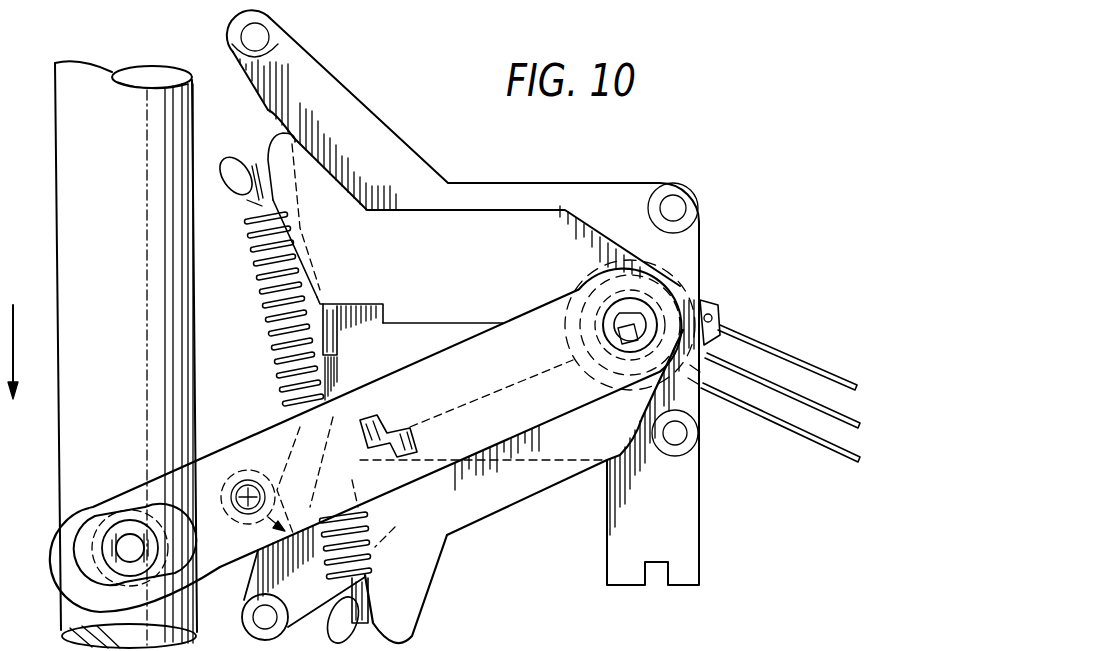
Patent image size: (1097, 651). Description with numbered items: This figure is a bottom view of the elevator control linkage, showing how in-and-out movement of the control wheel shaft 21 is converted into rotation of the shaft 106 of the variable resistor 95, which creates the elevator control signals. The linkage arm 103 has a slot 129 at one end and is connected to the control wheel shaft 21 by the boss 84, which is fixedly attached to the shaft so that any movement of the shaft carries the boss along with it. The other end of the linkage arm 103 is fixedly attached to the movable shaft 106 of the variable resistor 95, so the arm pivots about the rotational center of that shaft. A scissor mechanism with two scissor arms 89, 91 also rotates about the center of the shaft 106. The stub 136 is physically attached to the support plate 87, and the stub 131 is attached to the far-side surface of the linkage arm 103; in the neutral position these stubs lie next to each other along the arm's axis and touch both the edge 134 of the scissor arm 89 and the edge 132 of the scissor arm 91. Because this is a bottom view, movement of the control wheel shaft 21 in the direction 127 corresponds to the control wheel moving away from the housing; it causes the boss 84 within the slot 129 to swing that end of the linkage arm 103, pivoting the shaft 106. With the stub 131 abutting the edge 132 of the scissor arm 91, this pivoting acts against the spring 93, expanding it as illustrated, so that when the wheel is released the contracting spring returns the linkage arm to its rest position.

The direction 127 is at (15, 350).
The control wheel shaft 21 is at (183, 390).
The support plate 87 is at (542, 182).
The scissor arm 89 is at (277, 148).
The spring 93 is at (277, 327).
The edge 134 is at (357, 303).
The stub 136 is at (409, 322).
The edge 132 is at (350, 380).
The linkage arm 103 is at (231, 446).
The stub 131 is at (388, 432).
The slot 129 is at (82, 535).
The boss 84 is at (113, 527).
The shaft 106 is at (637, 313).
The variable resistor 95 is at (704, 300).
The scissor arm 91 is at (427, 613).